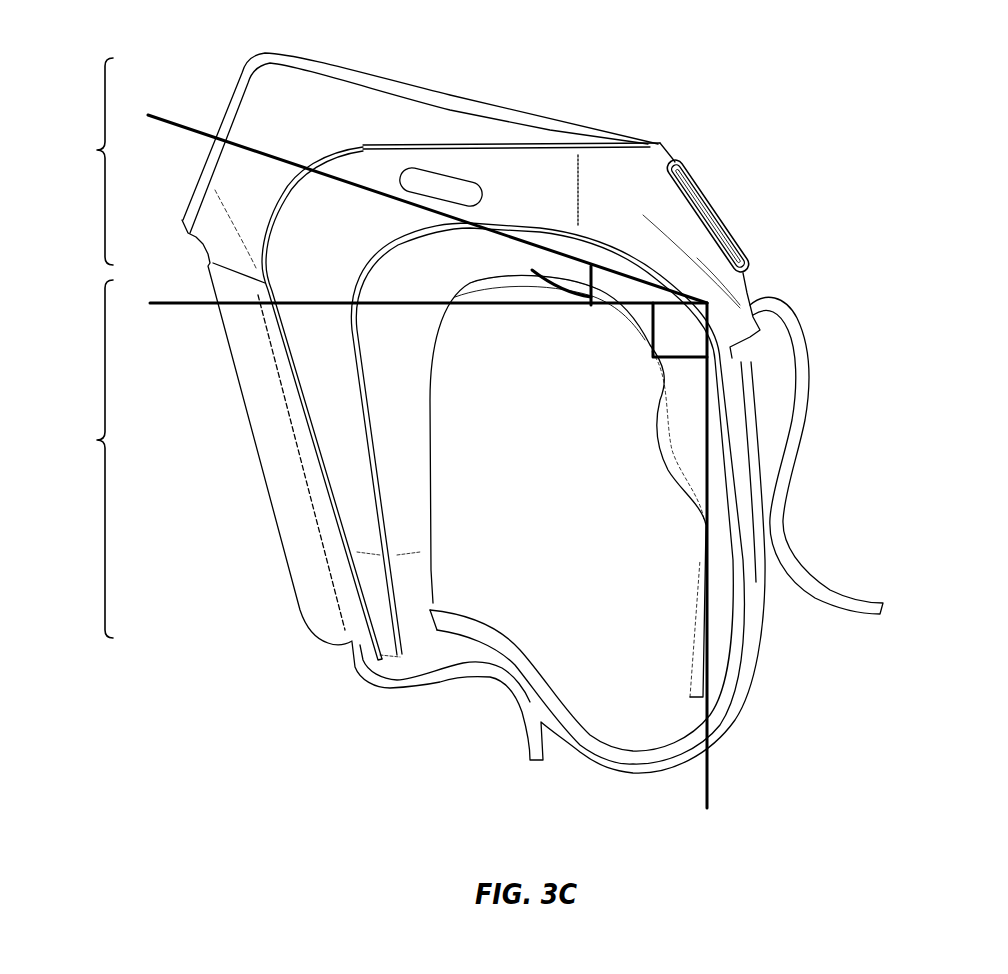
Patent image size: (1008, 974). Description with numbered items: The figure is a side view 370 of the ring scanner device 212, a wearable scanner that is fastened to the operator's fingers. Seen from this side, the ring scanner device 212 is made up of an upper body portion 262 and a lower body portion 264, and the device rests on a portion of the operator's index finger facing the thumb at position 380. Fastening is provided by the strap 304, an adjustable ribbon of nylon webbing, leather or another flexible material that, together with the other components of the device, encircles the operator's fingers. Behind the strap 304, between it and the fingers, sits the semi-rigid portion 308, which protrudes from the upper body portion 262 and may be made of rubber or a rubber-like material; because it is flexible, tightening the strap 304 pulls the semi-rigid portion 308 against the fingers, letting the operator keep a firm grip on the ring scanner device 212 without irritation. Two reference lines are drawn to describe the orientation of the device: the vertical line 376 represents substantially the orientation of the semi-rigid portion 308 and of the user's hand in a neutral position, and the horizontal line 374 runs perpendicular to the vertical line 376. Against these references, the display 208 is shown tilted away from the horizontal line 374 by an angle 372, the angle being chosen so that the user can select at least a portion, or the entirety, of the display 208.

The display 208 is at (413, 82).
The ring scanner device 212 is at (574, 94).
The upper body portion 262 is at (75, 161).
The lower body portion 264 is at (75, 459).
The strap 304 is at (642, 773).
The semi-rigid portion 308 is at (707, 420).
The side view 370 is at (782, 80).
The angle 372 is at (532, 270).
The horizontal line 374 is at (180, 305).
The vertical line 376 is at (708, 780).
The position 380 is at (543, 310).